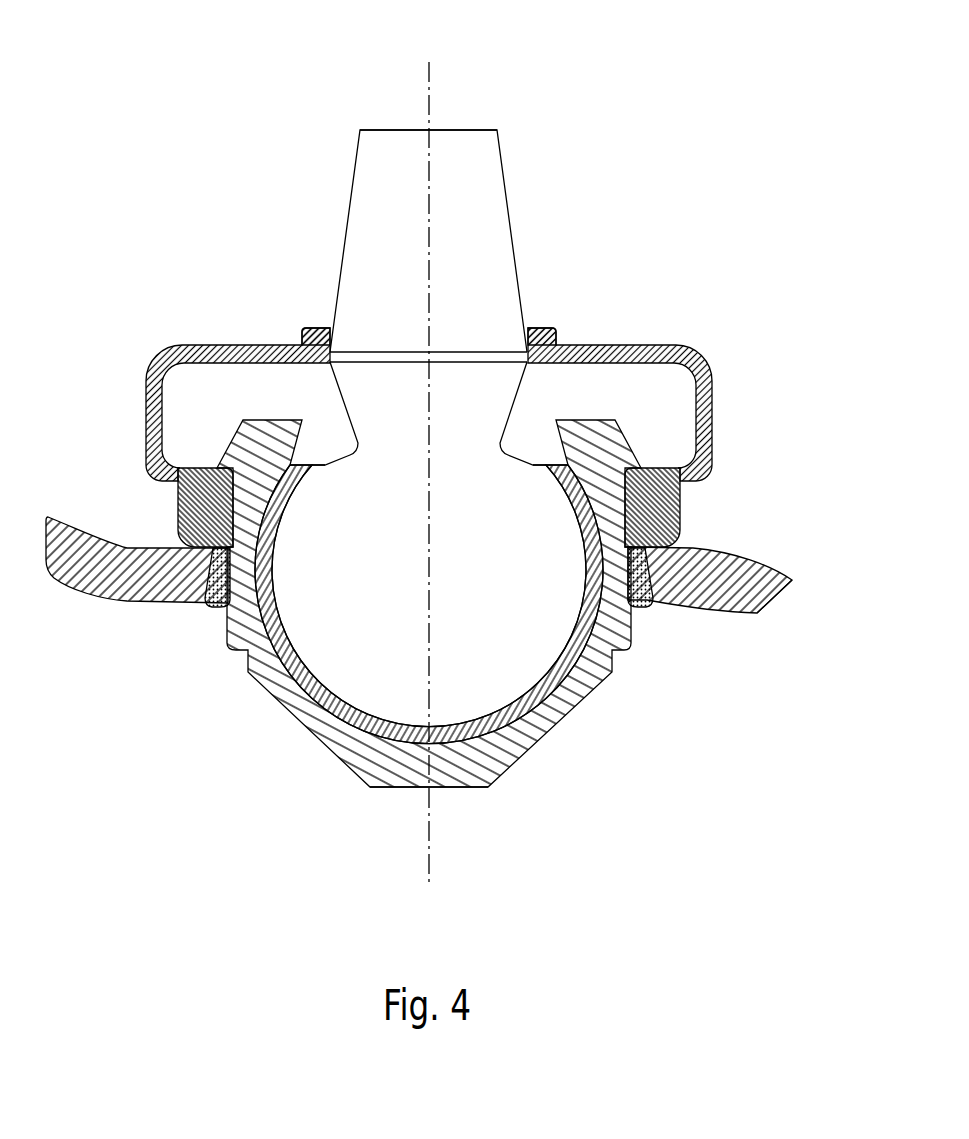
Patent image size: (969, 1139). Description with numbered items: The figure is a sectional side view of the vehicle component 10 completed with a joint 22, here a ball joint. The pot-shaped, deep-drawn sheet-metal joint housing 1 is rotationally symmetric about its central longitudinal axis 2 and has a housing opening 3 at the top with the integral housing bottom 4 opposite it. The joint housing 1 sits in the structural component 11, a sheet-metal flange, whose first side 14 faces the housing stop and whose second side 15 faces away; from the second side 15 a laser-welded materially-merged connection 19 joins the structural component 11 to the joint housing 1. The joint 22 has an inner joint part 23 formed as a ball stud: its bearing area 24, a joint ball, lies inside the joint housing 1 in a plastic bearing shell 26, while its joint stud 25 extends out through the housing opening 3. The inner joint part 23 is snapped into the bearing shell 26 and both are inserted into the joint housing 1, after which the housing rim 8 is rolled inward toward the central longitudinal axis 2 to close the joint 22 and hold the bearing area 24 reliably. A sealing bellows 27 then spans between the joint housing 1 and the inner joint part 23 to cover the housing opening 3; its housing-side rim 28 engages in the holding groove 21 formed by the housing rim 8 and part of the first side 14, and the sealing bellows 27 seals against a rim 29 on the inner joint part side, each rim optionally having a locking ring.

The joint housing 1 is at (566, 742).
The central longitudinal axis 2 is at (429, 66).
The housing opening 3 is at (303, 452).
The housing bottom 4 is at (497, 812).
The housing rim 8 is at (612, 443).
The vehicle component 10 is at (160, 205).
The structural component 11 is at (768, 596).
The first side 14 is at (781, 558).
The second side 15 is at (741, 621).
The materially-merged connection 19 is at (206, 578).
The holding groove 21 is at (204, 470).
The joint 22 is at (606, 267).
The inner joint part 23 is at (474, 164).
The bearing area 24 is at (513, 623).
The joint stud 25 is at (493, 236).
The bearing shell 26 is at (178, 503).
The sealing bellows 27 is at (704, 384).
The rim of the sealing bellows 28 is at (664, 517).
The rim on the side of the inner joint part 29 is at (554, 333).